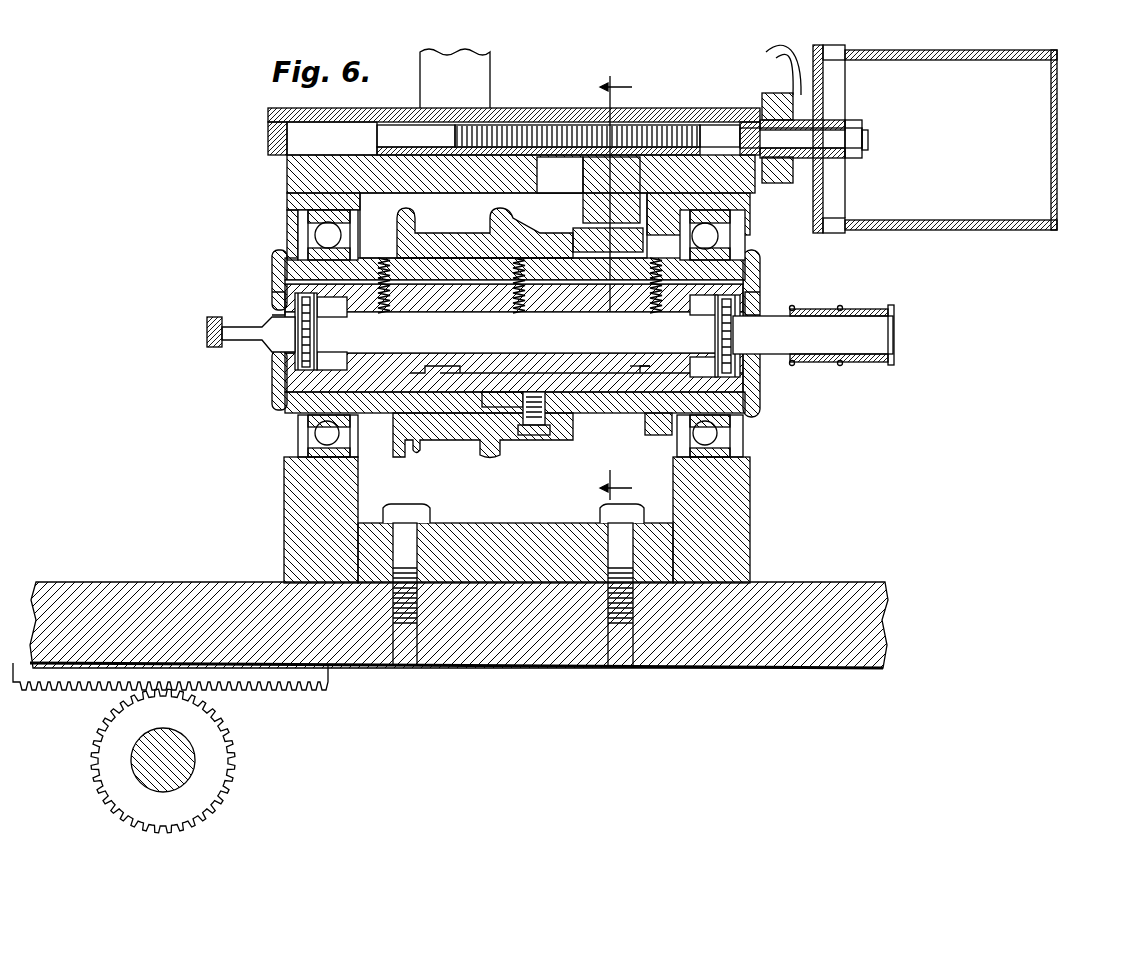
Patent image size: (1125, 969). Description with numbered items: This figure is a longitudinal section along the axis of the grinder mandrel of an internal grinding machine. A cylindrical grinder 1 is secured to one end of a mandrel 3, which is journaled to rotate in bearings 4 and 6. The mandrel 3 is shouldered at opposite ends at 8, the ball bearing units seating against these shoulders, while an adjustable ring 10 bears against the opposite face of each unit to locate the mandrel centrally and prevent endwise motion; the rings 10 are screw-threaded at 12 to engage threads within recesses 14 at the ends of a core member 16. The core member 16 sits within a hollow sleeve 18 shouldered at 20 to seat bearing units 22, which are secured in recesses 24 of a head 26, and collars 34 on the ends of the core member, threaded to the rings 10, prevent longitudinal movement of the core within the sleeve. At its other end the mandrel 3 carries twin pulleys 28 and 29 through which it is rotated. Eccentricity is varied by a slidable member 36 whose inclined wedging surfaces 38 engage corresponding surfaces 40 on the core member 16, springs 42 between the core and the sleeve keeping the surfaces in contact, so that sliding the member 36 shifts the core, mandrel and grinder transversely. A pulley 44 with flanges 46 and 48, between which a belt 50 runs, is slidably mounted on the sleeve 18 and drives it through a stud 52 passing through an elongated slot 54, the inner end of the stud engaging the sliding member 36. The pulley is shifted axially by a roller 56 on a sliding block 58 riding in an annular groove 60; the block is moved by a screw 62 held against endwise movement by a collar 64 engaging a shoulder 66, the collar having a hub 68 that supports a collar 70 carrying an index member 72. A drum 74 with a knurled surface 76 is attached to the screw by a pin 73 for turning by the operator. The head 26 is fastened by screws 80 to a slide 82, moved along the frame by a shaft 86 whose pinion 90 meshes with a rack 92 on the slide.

The cylindrical grinder 1 is at (212, 317).
The mandrel 3 is at (256, 335).
The bearing 4 is at (312, 343).
The bearing 6 is at (720, 346).
The shoulder 8 is at (312, 326).
The adjustable ring 10 is at (275, 296).
The screw threads 12 is at (276, 262).
The recess 14 is at (338, 300).
The core member 16 is at (758, 382).
The hollow sleeve 18 is at (386, 411).
The shoulder 20 is at (360, 424).
The bearing unit 22 is at (318, 432).
The recess 24 is at (305, 463).
The head 26 is at (750, 545).
The pulley 28 is at (866, 362).
The pulley 29 is at (826, 362).
The collar 34 is at (273, 410).
The slidable member 36 is at (585, 380).
The inclined wedging surface 38 is at (432, 364).
The inclined wedging surface 40 is at (445, 362).
The spring 42 is at (388, 312).
The pulley 44 is at (430, 447).
The flange 46 is at (402, 445).
The flange 48 is at (495, 453).
The belt 50 is at (490, 76).
The stud 52 is at (540, 436).
The elongated slot 54 is at (497, 392).
The roller 56 is at (590, 232).
The sliding block 58 is at (590, 204).
The annular groove 60 is at (576, 425).
The screw 62 is at (656, 132).
The collar 64 is at (755, 115).
The shoulder 66 is at (727, 130).
The hub 68 is at (835, 182).
The collar 70 is at (790, 100).
The index member 72 is at (784, 47).
The pin 73 is at (816, 114).
The drum 74 is at (1045, 96).
The knurled surface 76 is at (1053, 53).
The screw 80 is at (412, 530).
The slide 82 is at (842, 596).
The shaft 86 is at (172, 740).
The pinion 90 is at (240, 733).
The rack 92 is at (302, 680).